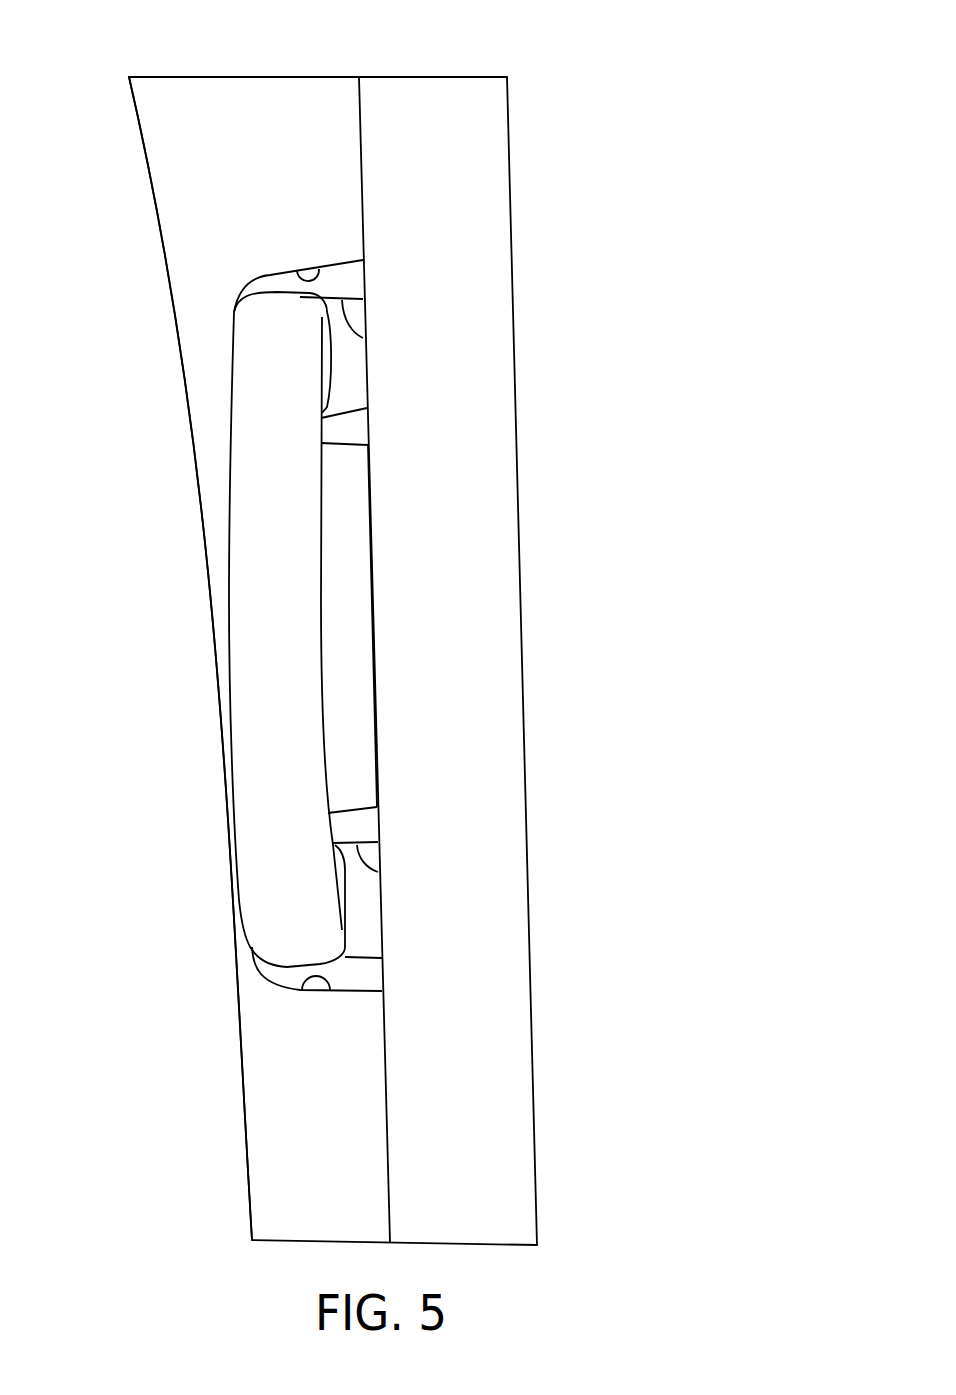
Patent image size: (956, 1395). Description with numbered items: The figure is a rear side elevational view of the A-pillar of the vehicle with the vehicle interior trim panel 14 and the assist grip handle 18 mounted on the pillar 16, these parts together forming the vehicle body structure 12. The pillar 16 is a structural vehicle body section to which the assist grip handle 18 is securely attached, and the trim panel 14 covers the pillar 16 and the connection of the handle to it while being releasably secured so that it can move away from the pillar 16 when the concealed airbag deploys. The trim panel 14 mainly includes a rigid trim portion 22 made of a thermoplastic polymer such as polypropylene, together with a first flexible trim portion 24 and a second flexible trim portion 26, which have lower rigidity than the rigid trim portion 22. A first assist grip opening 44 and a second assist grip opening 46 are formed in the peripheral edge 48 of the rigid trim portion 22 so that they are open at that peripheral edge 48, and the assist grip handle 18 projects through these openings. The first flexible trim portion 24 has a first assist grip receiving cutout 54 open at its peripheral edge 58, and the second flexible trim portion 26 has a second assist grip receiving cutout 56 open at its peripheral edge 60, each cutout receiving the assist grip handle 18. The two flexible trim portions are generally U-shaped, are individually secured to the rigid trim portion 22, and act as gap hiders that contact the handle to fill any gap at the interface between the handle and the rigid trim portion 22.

The vehicle body structure 12 is at (562, 175).
The vehicle interior trim panel 14 is at (153, 192).
The pillar 16 is at (463, 77).
The assist grip handle 18 is at (228, 438).
The rigid trim portion 22 is at (207, 240).
The first flexible trim portion 24 is at (345, 281).
The second flexible trim portion 26 is at (367, 977).
The first assist grip opening 44 is at (316, 280).
The second assist grip opening 46 is at (330, 991).
The peripheral edge 48 is at (372, 541).
The first assist grip receiving cutout 54 is at (365, 338).
The second assist grip receiving cutout 56 is at (380, 873).
The peripheral edge 58 is at (368, 432).
The peripheral edge 60 is at (380, 823).